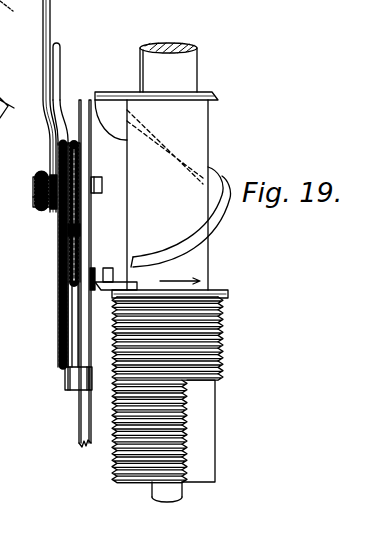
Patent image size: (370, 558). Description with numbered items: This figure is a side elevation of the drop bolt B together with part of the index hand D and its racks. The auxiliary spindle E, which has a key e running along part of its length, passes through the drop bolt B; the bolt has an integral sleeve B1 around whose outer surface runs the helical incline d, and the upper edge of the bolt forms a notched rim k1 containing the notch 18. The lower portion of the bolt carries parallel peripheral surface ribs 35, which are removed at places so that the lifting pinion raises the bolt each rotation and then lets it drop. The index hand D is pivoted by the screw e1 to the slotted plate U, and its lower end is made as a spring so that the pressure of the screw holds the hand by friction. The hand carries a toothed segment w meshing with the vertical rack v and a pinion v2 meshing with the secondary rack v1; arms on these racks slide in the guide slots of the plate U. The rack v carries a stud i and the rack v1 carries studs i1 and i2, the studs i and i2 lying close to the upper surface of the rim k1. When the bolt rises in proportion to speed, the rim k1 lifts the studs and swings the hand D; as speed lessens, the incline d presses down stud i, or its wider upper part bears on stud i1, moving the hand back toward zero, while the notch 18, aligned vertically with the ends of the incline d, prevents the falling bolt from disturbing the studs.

The index hand D is at (48, 35).
The toothed segment w is at (50, 62).
The slotted plate U is at (82, 98).
The key e is at (140, 63).
The auxiliary spindle E is at (160, 69).
The helical incline d is at (230, 228).
The stud i1 is at (103, 178).
The sleeve B1 is at (167, 195).
The pinion v2 is at (70, 230).
The stud i2 is at (106, 270).
The stud i is at (114, 282).
The notched rim k1 is at (237, 271).
The pivot screw e1 is at (28, 199).
The secondary rack v1 is at (70, 263).
The vertical rack v is at (62, 357).
The drop bolt B is at (180, 399).
The notch 18 is at (173, 278).
The peripheral surface ribs 35 is at (88, 466).